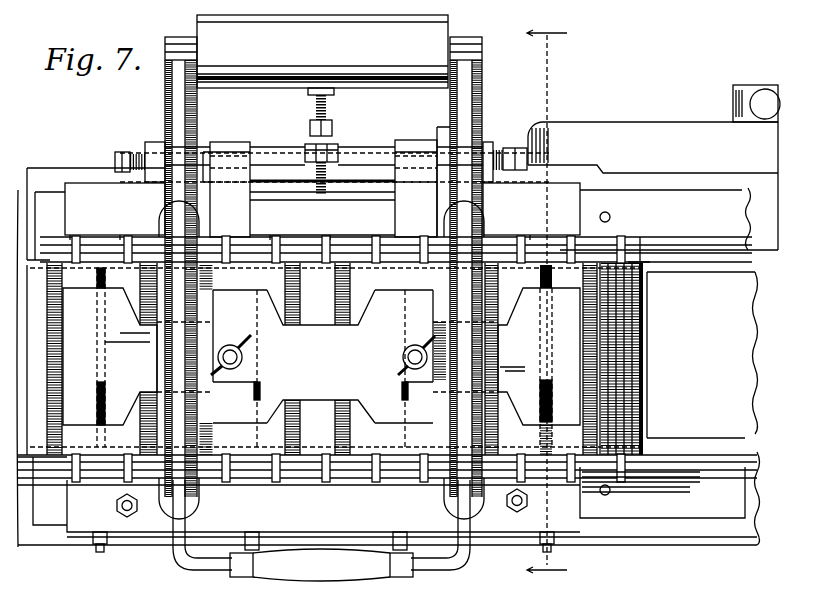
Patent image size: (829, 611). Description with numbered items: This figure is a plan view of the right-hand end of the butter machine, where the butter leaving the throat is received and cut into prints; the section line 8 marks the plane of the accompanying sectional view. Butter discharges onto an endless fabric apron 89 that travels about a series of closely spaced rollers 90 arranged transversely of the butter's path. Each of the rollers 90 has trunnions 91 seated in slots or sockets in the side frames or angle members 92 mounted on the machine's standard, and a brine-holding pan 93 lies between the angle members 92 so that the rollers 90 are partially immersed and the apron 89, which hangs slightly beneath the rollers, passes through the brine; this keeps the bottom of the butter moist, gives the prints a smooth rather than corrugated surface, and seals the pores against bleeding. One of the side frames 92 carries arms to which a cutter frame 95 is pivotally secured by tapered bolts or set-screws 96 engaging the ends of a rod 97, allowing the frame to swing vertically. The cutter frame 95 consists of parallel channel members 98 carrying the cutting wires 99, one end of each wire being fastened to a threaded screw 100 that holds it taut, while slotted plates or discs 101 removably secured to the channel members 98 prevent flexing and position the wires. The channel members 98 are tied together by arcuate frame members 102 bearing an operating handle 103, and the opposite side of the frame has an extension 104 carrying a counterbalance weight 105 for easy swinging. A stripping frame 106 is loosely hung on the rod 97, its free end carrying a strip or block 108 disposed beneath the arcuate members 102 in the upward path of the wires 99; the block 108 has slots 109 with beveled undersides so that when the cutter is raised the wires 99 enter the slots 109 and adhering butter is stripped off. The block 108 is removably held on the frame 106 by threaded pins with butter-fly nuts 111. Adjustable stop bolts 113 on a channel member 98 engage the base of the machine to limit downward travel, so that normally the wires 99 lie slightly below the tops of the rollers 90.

The section line 8- 8 is at (547, 302).
The endless member or apron 89 is at (55, 318).
The rollers 90 is at (107, 422).
The trunnions 91 is at (385, 240).
The side frames or angle members 92 is at (663, 225).
The brine-holding receptacle or pan 93 is at (642, 263).
The cutter frame 95 is at (352, 187).
The tapered bolts or set-screws 96 is at (128, 150).
The rod 97 is at (266, 150).
The channel members 98 is at (281, 186).
The cutting wires 99 is at (113, 483).
The threaded member or screw 100 is at (100, 553).
The plates or discs 101 is at (120, 236).
The arcuate frame members 102 is at (163, 222).
The operating handle 103 is at (321, 577).
The extension 104 is at (165, 70).
The counterbalance weight 105 is at (450, 17).
The frame 106 is at (318, 195).
The strip or block 108 is at (585, 363).
The slots 109 is at (395, 384).
The butter-fly nuts 111 is at (233, 345).
The bolts 113 is at (128, 517).